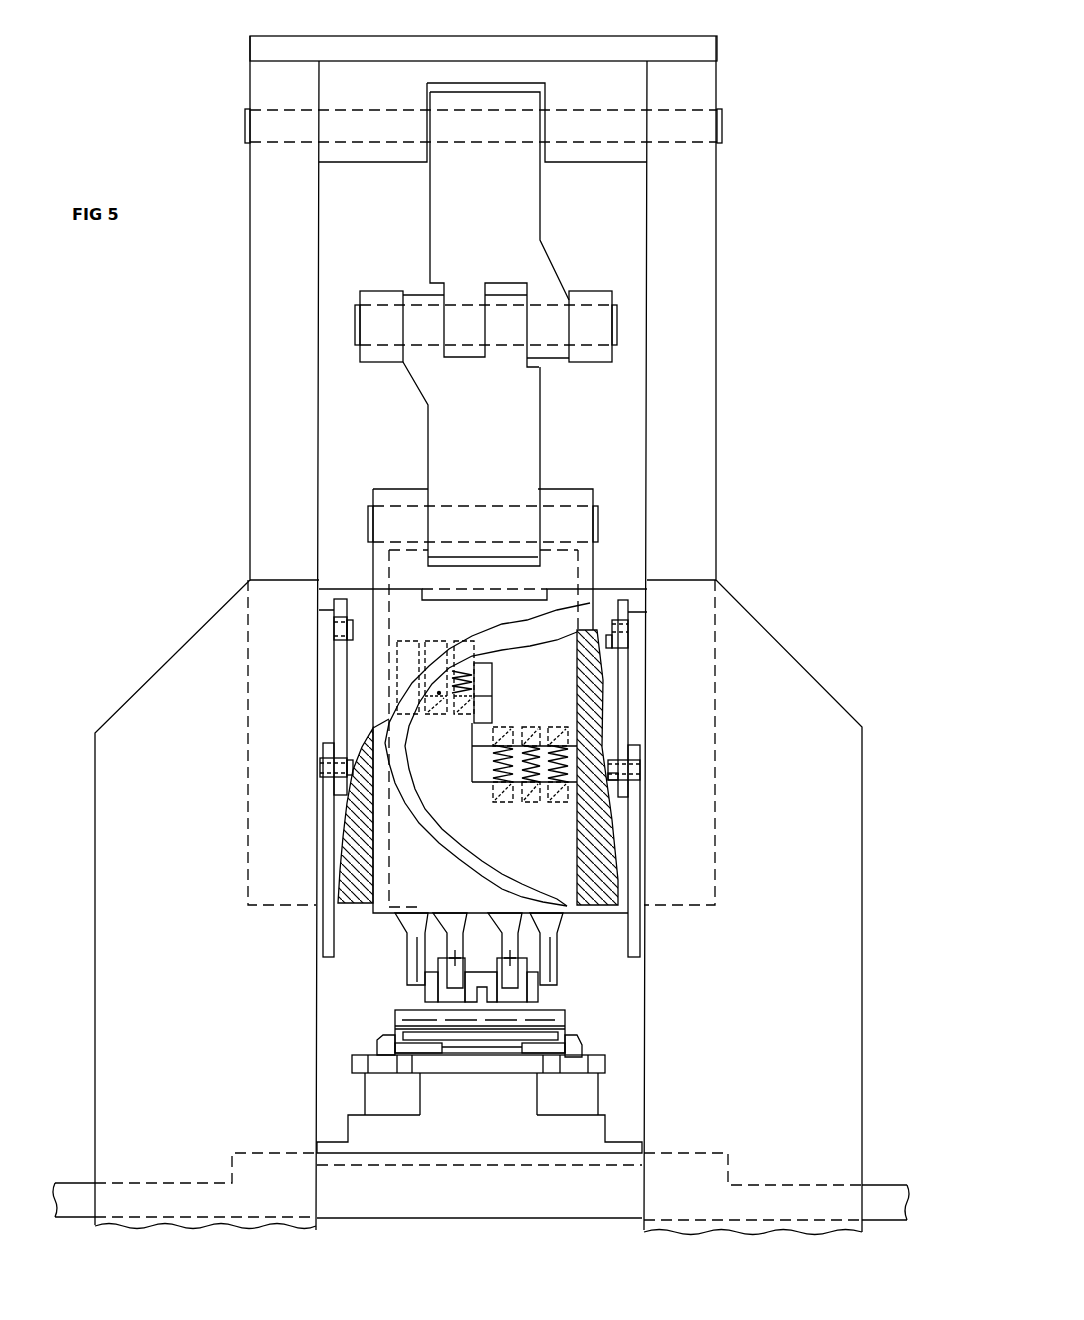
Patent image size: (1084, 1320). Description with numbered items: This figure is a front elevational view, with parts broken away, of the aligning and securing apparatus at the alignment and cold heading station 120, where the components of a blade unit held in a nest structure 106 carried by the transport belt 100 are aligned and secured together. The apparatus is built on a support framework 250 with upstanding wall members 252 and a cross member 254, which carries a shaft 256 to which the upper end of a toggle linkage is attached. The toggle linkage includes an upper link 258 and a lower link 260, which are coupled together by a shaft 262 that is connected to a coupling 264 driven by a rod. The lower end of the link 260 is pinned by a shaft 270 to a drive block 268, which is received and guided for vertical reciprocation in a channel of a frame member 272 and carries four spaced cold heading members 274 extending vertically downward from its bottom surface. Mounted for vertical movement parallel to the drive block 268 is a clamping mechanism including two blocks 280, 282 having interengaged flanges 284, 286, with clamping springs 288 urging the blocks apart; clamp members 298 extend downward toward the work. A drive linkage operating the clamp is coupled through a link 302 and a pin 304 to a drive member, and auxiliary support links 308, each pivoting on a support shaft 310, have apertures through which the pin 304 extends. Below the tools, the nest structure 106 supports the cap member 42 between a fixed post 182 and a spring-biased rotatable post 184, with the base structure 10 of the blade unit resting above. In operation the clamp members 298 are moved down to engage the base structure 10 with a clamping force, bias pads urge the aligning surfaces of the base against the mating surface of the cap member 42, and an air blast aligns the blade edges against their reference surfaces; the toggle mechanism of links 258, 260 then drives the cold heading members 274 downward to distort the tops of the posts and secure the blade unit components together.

The base structure 10 is at (390, 1008).
The cap member 42 is at (390, 1028).
The transport belt 100 is at (216, 1180).
The nest structure 106 is at (615, 1057).
The alignment and cold heading station 120 is at (154, 322).
The fixed post 182 is at (380, 1042).
The post 184 is at (580, 1045).
The support framework 250 is at (808, 691).
The upstanding wall members 252 is at (252, 565).
The cross member 254 is at (247, 50).
The shaft 256 is at (244, 125).
The link 258 is at (528, 210).
The link 260 is at (432, 437).
The shaft 262 is at (356, 310).
The coupling 264 is at (594, 295).
The drive block 268 is at (573, 495).
The shaft 270 is at (368, 517).
The frame member 272 is at (363, 604).
The cold heading members 274 is at (407, 963).
The upper block 280 is at (563, 690).
The lower block 282 is at (555, 846).
The flange 284 is at (482, 733).
The flange 286 is at (485, 712).
The clamping springs 288 is at (480, 679).
The clamp members 298 is at (427, 997).
The link 302 is at (326, 851).
The pin 304 is at (345, 785).
The auxiliary support links 308 is at (340, 698).
The support shaft 310 is at (345, 641).